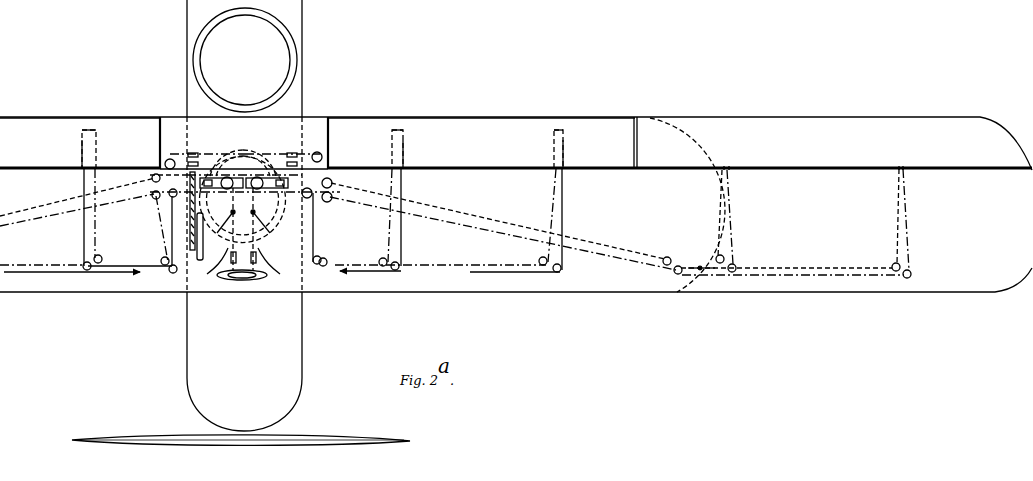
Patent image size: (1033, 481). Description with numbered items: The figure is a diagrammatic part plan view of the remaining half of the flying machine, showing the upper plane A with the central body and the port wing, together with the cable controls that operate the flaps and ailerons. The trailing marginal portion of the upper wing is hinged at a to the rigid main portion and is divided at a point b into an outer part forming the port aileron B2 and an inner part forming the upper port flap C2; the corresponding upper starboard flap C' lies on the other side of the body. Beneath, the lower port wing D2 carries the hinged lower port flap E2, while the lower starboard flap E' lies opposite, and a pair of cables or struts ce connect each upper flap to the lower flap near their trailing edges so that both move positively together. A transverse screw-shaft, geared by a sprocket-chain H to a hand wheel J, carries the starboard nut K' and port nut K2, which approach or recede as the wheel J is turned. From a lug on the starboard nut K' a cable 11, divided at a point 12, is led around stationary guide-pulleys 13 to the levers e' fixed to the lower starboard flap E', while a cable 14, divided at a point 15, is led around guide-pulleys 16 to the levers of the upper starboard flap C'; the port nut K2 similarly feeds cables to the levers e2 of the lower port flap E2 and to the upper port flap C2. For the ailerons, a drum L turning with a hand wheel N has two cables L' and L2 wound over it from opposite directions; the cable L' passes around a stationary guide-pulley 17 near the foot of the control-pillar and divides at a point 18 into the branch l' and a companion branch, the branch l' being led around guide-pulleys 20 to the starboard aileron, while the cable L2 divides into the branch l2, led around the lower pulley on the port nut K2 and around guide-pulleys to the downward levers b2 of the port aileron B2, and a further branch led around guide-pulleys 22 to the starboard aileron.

The upper plane A is at (245, 60).
The upper starboard flap C' is at (80, 164).
The lower starboard flap E' is at (80, 101).
The cables or struts ce is at (88, 130).
The levers e' is at (67, 154).
The levers e2 is at (404, 167).
The branch l' is at (93, 195).
The stationary guide-pulleys 20 is at (152, 180).
The stationary guide-pulleys 22 is at (152, 198).
The stationary guide-pulleys 13 is at (168, 200).
The stationary guide-pulleys 16 is at (164, 163).
The division point 15 is at (150, 268).
The division point 12 is at (136, 273).
The cable 11 is at (20, 270).
The cable 14 is at (40, 265).
The starboard nut K' is at (226, 156).
The port nut K2 is at (268, 172).
The sprocket-chain H is at (197, 200).
The hand wheel J is at (199, 262).
The division point 18 is at (219, 229).
The cable L' is at (220, 256).
The cable L2 is at (258, 246).
The stationary guide-pulley 17 is at (211, 268).
The drum L is at (242, 290).
The hand wheel N is at (250, 280).
The upper port flap C2 is at (480, 121).
The lower port flap E2 is at (481, 105).
The division point b is at (634, 134).
The hinge a is at (660, 174).
The port aileron B2 is at (843, 121).
The branch l2 is at (456, 212).
The lower port wing D2 is at (718, 203).
The levers b2 is at (724, 168).